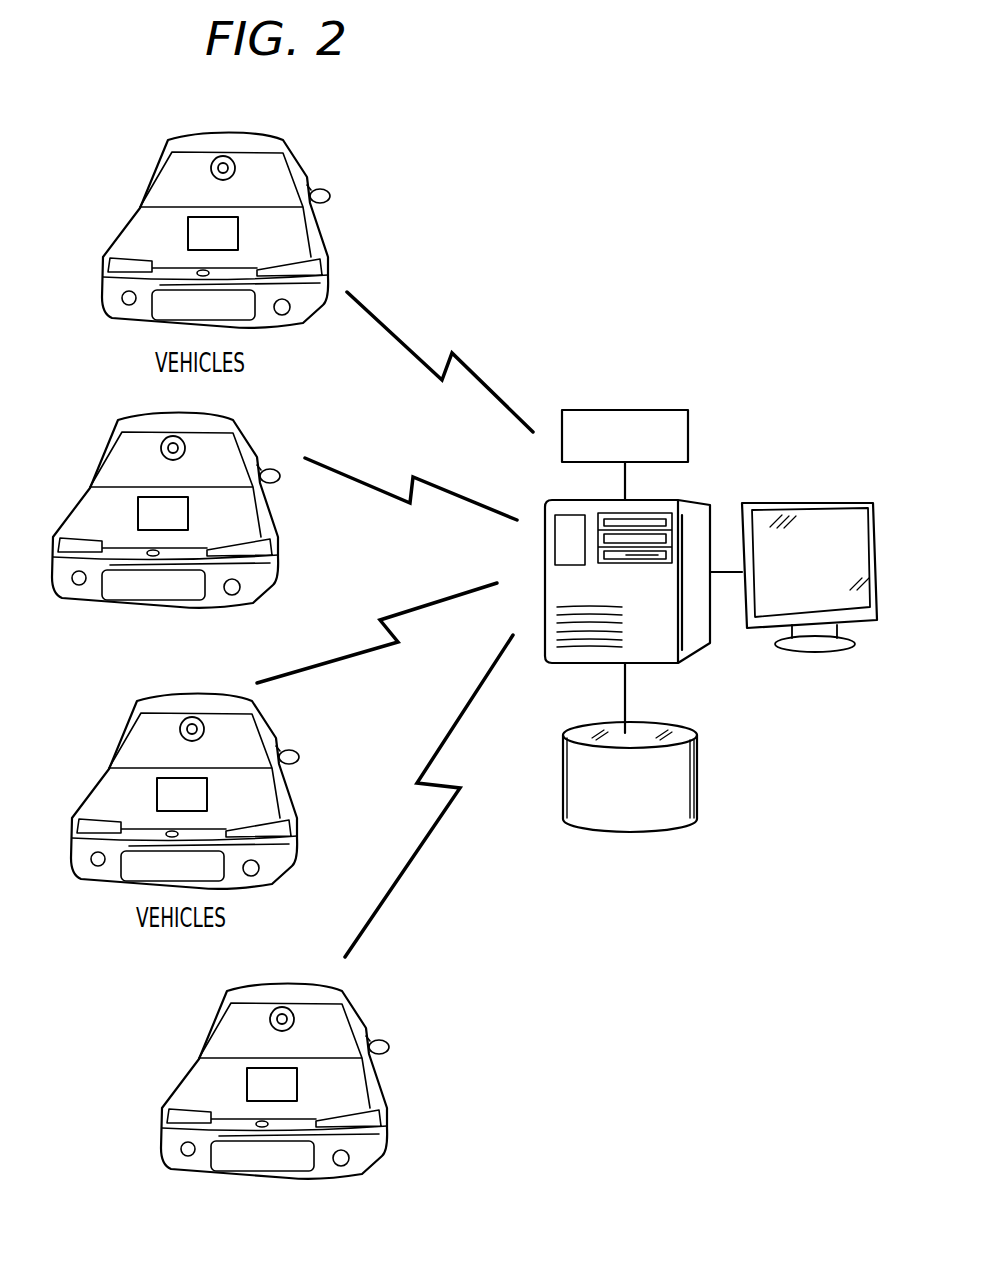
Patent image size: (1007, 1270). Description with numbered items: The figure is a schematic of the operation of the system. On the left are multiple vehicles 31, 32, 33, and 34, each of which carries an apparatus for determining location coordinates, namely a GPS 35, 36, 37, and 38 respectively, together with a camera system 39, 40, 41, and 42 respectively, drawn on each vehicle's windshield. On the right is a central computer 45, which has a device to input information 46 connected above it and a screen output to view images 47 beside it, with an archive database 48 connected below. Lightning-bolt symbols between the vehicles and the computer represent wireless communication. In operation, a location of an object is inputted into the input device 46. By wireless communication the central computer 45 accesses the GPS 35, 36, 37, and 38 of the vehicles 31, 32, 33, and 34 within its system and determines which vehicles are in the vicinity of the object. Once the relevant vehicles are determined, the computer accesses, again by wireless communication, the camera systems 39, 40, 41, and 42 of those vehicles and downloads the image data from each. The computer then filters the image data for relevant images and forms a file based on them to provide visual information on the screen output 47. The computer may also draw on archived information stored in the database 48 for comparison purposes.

The vehicle 31 is at (200, 140).
The vehicle 32 is at (166, 488).
The vehicle 33 is at (185, 769).
The vehicle 34 is at (275, 1059).
The GPS 35 is at (188, 234).
The GPS 36 is at (106, 511).
The GPS 37 is at (125, 792).
The GPS 38 is at (215, 1082).
The camera system 39 is at (211, 170).
The camera system 40 is at (121, 447).
The camera system 41 is at (140, 728).
The camera system 42 is at (230, 1018).
The central computer 45 is at (674, 660).
The input device 46 is at (626, 408).
The screen output to view images 47 is at (810, 503).
The database 48 is at (690, 776).